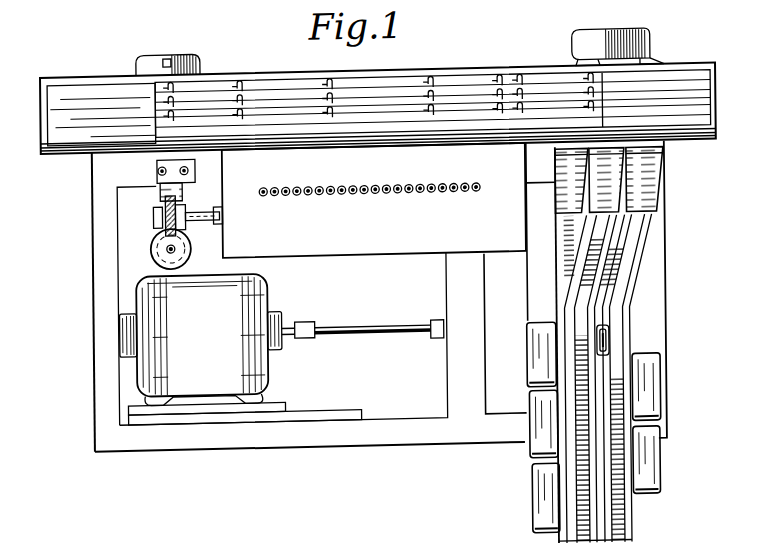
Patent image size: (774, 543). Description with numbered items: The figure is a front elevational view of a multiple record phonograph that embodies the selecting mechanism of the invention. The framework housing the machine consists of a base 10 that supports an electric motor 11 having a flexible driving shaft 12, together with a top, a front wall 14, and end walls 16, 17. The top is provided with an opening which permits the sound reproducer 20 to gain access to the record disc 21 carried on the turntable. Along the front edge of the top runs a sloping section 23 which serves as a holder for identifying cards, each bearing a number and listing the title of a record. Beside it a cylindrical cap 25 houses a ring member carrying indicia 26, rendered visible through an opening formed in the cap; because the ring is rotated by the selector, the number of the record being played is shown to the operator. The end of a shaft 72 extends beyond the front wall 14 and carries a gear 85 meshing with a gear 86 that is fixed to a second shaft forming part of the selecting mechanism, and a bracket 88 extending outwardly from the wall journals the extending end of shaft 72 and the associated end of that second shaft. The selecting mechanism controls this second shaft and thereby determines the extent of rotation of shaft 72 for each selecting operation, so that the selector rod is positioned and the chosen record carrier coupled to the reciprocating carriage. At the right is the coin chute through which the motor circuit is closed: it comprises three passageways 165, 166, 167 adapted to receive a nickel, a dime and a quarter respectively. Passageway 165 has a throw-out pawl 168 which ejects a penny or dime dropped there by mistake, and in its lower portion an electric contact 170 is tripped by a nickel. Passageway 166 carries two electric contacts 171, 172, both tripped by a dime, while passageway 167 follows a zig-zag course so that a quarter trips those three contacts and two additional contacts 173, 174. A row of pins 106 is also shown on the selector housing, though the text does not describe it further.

The base 10 is at (358, 445).
The electric motor 11 is at (228, 376).
The flexible driving shaft 12 is at (360, 344).
The front wall 14 is at (444, 294).
The end wall 16 is at (91, 350).
The end wall 17 is at (664, 308).
The sound reproducer 20 is at (649, 46).
The record disc 21 is at (451, 94).
The sloping section 23 is at (62, 127).
The cylindrical cap 25 is at (197, 60).
The indicia 26 is at (167, 62).
The shaft 72 is at (166, 251).
The gear 85 is at (150, 256).
The gear 86 is at (151, 218).
The bracket 88 is at (174, 168).
The key pins 106 is at (400, 202).
The passageway 165 is at (656, 243).
The passageway 166 is at (599, 271).
The passageway 167 is at (555, 274).
The throw-out pawl 168 is at (608, 352).
The electric contact 170 is at (631, 499).
The electric contact 171 is at (553, 384).
The electric contact 172 is at (556, 537).
The electric contact 173 is at (638, 426).
The electric contact 174 is at (526, 467).